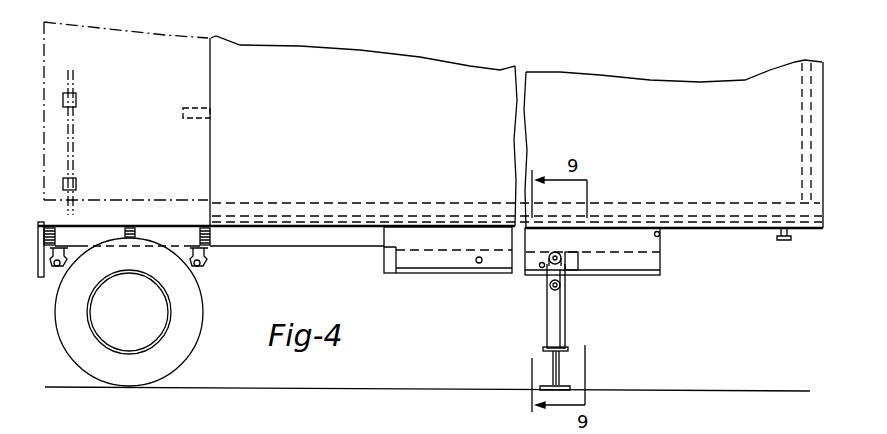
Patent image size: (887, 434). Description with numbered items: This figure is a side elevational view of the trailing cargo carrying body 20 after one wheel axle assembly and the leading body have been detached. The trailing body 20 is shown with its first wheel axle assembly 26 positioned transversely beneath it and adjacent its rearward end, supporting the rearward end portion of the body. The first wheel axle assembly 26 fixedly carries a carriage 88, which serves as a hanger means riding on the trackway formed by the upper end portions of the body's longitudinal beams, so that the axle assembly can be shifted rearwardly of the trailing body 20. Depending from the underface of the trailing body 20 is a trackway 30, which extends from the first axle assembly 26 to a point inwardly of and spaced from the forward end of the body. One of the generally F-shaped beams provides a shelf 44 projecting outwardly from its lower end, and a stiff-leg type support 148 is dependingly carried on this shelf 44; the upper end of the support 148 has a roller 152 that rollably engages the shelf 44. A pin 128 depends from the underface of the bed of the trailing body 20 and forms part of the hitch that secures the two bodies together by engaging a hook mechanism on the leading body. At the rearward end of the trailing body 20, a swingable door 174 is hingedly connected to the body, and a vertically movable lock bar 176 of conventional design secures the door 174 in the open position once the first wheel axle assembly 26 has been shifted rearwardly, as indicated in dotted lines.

The trailing cargo carrying body 20 is at (730, 233).
The first wheel axle assembly 26 is at (208, 296).
The trackway 30 is at (639, 281).
The shelf 44 is at (458, 270).
The carriage 88 is at (337, 250).
The pin 128 is at (785, 243).
The support 148 is at (546, 320).
The roller 152 is at (561, 253).
The swingable door 174 is at (167, 37).
The lock bar 176 is at (73, 138).